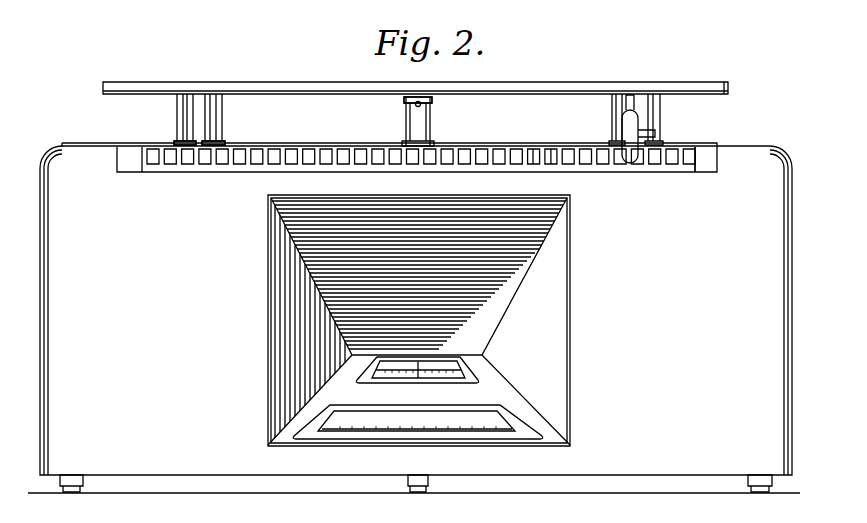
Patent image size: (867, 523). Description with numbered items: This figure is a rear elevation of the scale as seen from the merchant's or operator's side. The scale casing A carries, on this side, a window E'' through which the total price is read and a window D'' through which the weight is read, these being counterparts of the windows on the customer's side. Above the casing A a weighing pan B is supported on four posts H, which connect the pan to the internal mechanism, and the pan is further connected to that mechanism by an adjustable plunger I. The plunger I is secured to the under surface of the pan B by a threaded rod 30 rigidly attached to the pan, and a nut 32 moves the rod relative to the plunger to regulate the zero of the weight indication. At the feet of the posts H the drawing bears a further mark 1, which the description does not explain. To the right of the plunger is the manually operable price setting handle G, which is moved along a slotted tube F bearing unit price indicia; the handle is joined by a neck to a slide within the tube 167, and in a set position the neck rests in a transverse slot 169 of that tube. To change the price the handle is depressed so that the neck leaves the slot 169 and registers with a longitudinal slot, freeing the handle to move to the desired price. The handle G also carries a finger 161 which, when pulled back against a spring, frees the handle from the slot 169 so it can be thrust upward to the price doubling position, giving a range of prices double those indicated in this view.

The post base 1 is at (210, 141).
The threaded rod 30 is at (430, 97).
The nut 32 is at (406, 106).
The finger 161 is at (652, 133).
The tube 167 is at (648, 172).
The transverse slot 169 is at (563, 150).
The scale casing A is at (414, 319).
The weighing pan B is at (614, 86).
The posts H is at (215, 115).
The adjustable plunger I is at (432, 118).
The price setting handle G is at (620, 118).
The slotted tube F is at (675, 148).
The total price window E'' is at (417, 352).
The weight window D'' is at (417, 403).